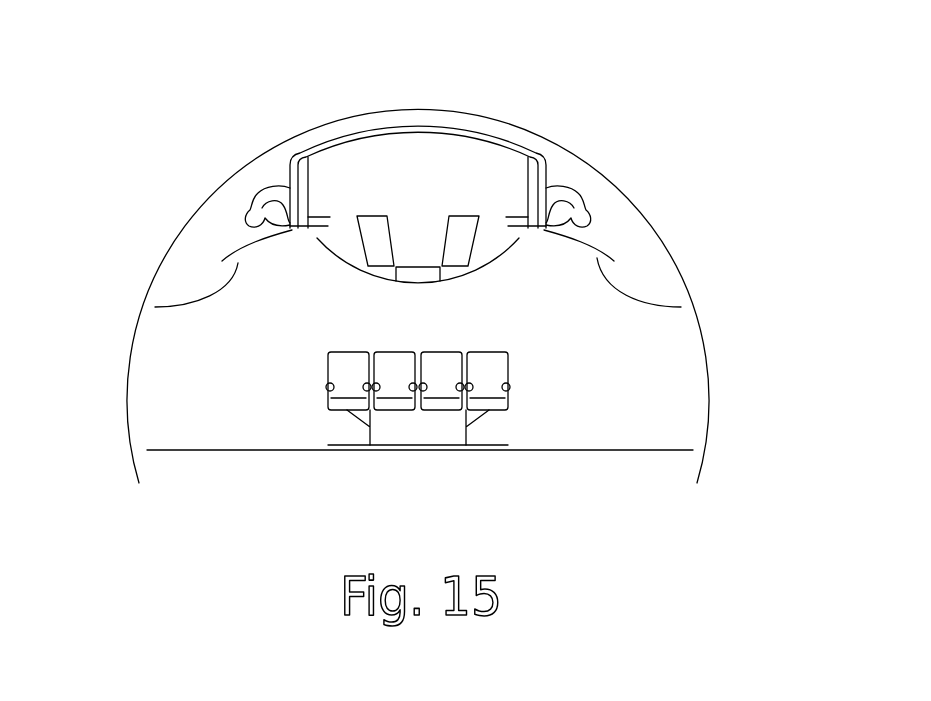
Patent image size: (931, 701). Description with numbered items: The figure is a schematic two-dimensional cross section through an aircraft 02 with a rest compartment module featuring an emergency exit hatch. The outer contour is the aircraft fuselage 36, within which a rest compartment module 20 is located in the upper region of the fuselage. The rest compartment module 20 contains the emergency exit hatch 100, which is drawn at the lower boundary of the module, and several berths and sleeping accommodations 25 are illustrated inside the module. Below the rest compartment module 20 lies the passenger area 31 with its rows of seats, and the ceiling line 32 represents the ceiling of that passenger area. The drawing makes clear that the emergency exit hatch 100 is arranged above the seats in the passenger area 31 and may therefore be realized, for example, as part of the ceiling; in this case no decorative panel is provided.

The aircraft with rest compartment module featuring emergency exit hatch 02 is at (718, 186).
The rest compartment module 20 is at (415, 223).
The berths and sleeping accommodations 25 is at (328, 158).
The passenger area 31 is at (485, 428).
The ceiling line 32 is at (583, 250).
The aircraft fuselage 36 is at (184, 227).
The emergency exit hatch 100 is at (405, 284).